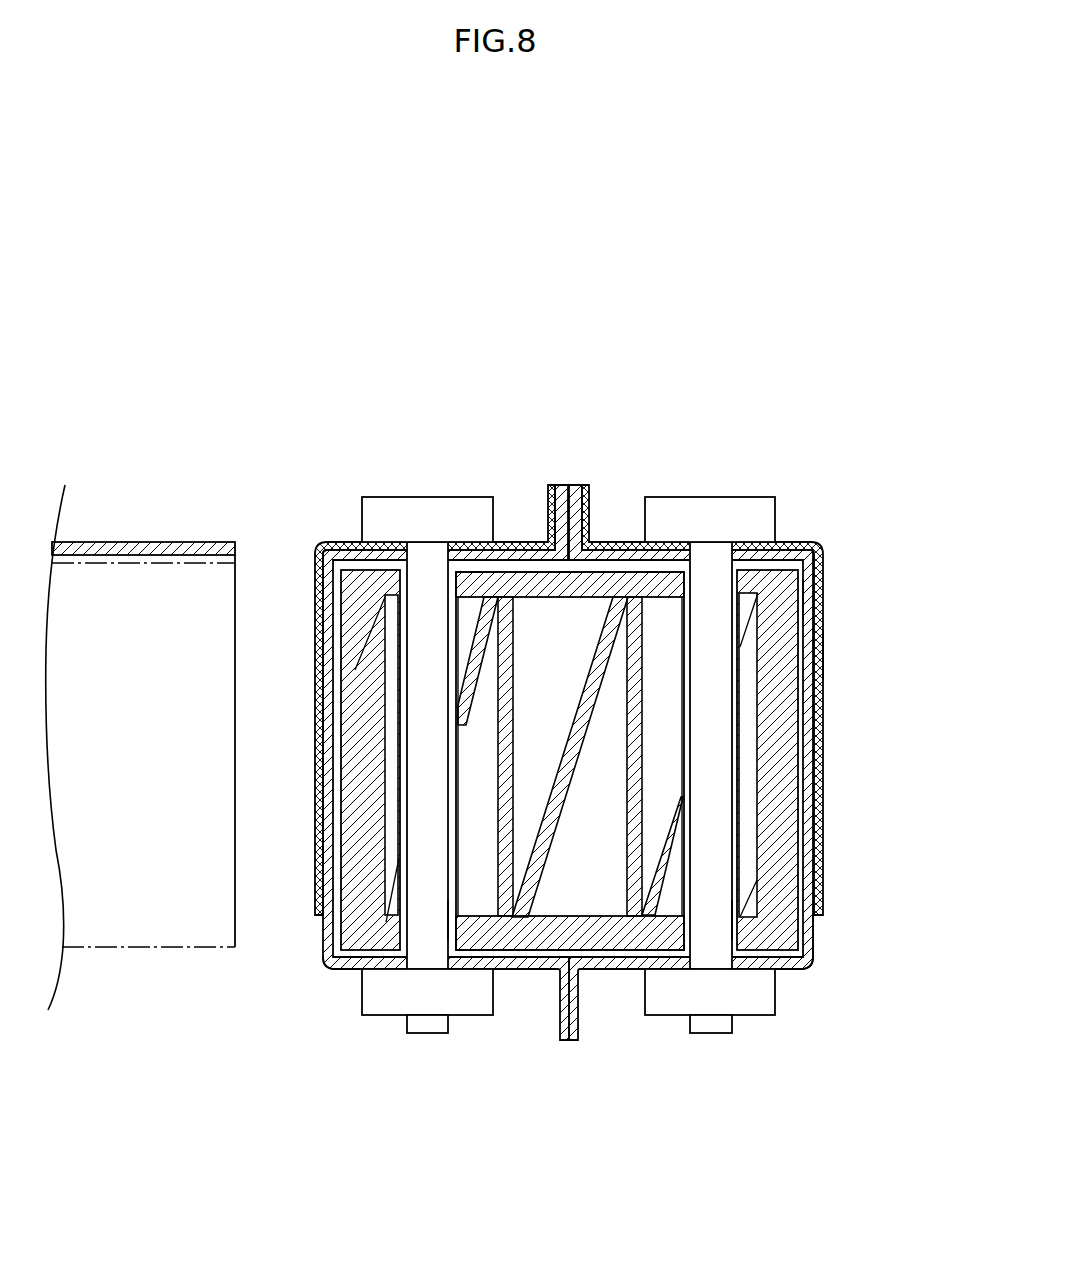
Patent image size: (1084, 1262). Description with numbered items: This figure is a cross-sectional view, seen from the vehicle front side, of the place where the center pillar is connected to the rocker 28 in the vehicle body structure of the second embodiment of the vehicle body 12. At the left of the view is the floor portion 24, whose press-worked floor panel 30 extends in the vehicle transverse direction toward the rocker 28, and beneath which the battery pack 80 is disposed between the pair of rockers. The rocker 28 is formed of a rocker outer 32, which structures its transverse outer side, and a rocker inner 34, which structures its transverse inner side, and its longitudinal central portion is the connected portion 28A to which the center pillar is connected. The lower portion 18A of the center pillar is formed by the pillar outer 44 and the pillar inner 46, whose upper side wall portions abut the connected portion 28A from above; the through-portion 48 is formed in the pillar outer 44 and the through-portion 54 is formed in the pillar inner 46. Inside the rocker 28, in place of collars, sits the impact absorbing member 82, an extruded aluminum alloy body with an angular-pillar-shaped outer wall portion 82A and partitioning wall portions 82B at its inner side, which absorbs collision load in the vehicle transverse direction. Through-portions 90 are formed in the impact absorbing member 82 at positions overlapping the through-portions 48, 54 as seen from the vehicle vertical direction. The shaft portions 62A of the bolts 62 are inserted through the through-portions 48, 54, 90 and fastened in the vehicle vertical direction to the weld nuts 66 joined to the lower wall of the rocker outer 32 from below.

The battery 12 is at (758, 302).
The floor portion 24 is at (155, 440).
The floor panel 30 is at (140, 541).
The battery pack 80 is at (177, 947).
The rocker 28 is at (822, 1052).
The connected portion 28A is at (813, 960).
The rocker outer 32 is at (813, 930).
The rocker inner 34 is at (347, 973).
The pillar outer 44 is at (823, 793).
The pillar inner 46 is at (322, 893).
The lower portion 18A is at (823, 653).
The outer wall portion 82A is at (803, 601).
The through-portion 48 is at (712, 542).
The through-portion 54 is at (427, 542).
The bolt 62 is at (388, 517).
The shaft portion 62A is at (428, 614).
The weld nut 66 is at (478, 1005).
The impact absorbing member 82 is at (631, 487).
The partitioning wall portion 82B is at (567, 788).
The through-portion 90 is at (444, 923).